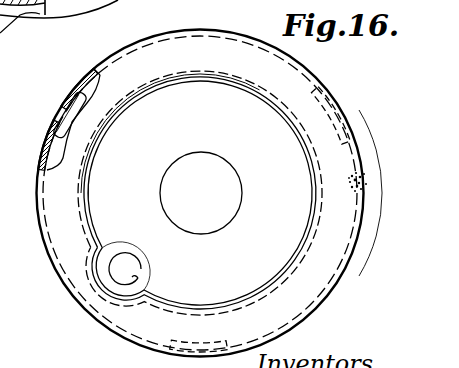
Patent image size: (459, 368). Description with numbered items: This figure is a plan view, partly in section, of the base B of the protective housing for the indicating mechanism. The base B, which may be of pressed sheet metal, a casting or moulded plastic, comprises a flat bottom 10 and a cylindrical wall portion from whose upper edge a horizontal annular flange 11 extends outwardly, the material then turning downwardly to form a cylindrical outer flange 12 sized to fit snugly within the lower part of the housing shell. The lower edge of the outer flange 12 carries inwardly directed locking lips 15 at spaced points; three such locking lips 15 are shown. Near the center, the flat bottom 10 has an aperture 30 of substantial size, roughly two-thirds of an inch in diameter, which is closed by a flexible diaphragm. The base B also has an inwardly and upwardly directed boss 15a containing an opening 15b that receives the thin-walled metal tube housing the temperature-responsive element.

The flat bottom 10 is at (185, 105).
The horizontal annular flange 11 is at (342, 200).
The cylindrical outer flange 12 is at (44, 144).
The locking lips 15 is at (73, 101).
The boss 15a is at (157, 264).
The opening 15b is at (129, 256).
The aperture 30 is at (231, 178).
The base B is at (73, 312).